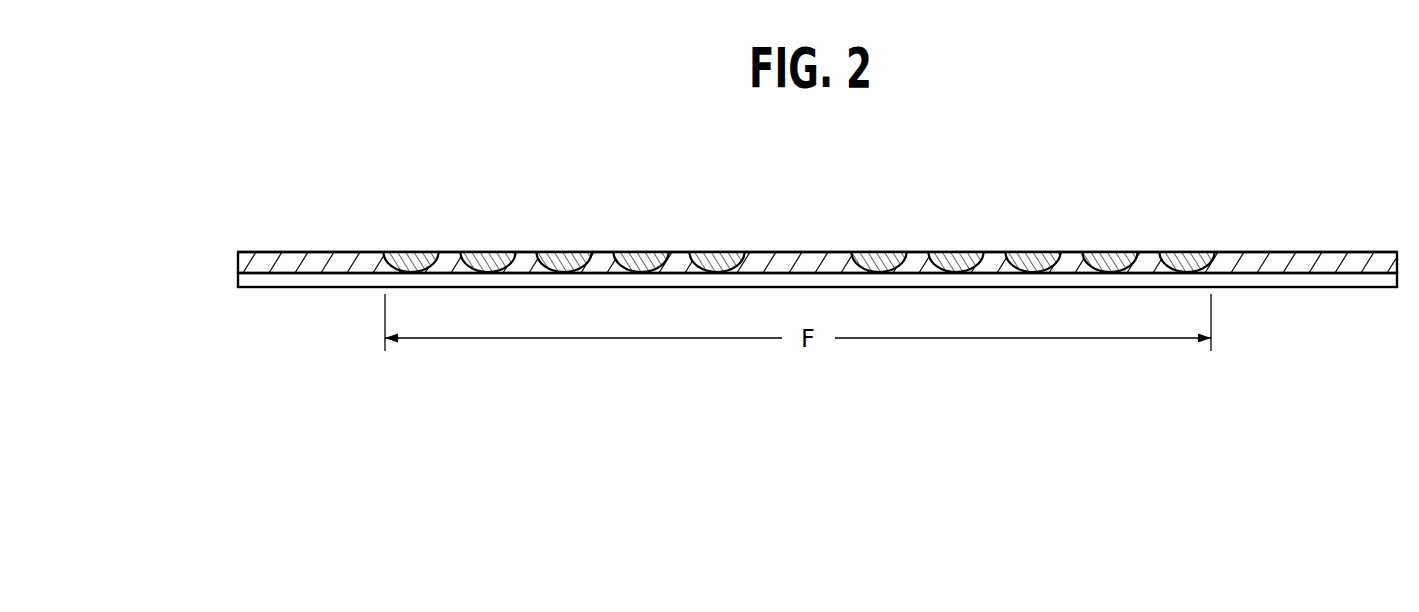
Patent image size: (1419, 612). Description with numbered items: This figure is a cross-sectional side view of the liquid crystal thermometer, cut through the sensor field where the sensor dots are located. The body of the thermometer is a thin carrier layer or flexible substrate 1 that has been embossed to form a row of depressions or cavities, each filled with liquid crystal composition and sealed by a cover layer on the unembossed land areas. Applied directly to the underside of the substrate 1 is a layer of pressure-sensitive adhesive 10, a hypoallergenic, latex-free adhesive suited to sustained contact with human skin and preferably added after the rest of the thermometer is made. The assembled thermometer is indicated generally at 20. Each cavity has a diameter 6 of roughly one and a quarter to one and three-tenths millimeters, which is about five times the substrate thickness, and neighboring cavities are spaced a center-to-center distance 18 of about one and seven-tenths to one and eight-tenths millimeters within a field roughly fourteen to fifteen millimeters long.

The flexible substrate 1 is at (238, 262).
The pressure-sensitive adhesive layer 10 is at (238, 280).
The pad assembly 20 is at (757, 219).
The diameter of the cavities 6 is at (537, 235).
The center-to-center distance 18 is at (879, 239).